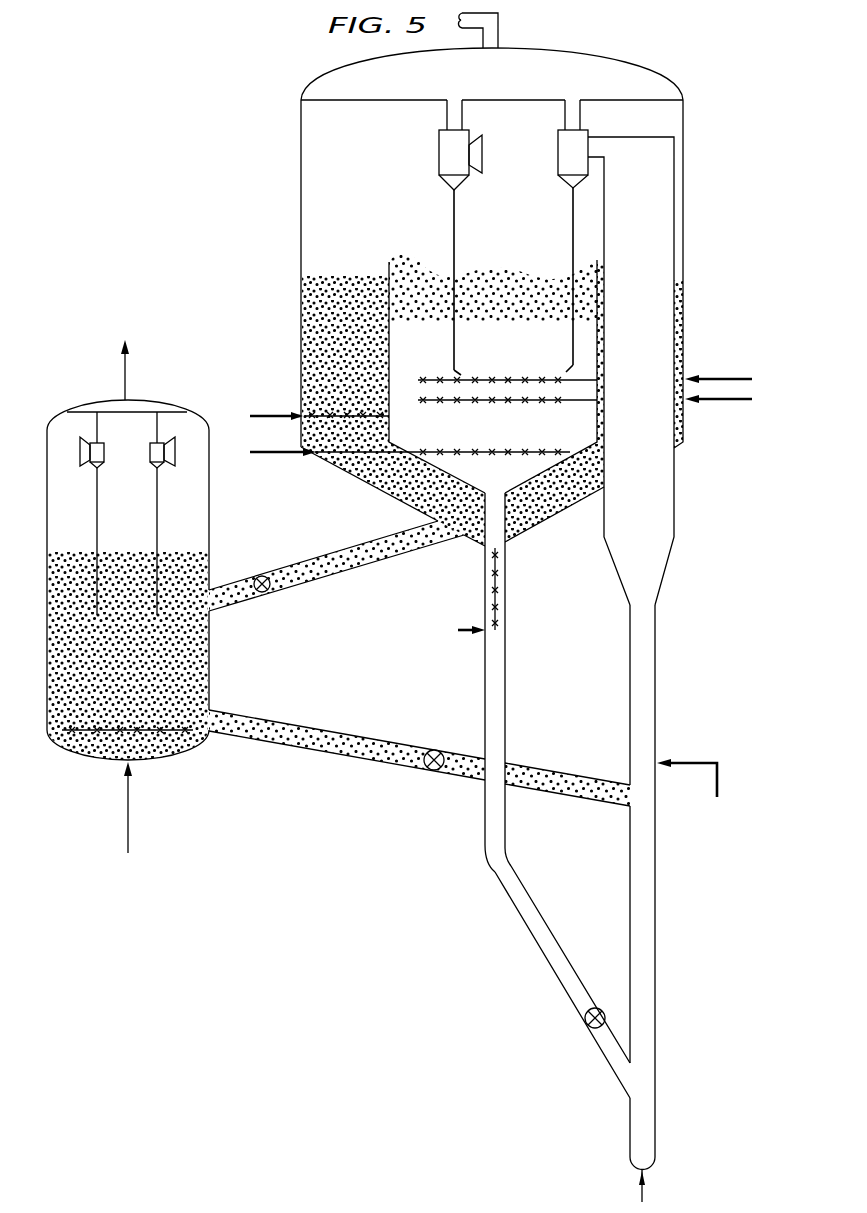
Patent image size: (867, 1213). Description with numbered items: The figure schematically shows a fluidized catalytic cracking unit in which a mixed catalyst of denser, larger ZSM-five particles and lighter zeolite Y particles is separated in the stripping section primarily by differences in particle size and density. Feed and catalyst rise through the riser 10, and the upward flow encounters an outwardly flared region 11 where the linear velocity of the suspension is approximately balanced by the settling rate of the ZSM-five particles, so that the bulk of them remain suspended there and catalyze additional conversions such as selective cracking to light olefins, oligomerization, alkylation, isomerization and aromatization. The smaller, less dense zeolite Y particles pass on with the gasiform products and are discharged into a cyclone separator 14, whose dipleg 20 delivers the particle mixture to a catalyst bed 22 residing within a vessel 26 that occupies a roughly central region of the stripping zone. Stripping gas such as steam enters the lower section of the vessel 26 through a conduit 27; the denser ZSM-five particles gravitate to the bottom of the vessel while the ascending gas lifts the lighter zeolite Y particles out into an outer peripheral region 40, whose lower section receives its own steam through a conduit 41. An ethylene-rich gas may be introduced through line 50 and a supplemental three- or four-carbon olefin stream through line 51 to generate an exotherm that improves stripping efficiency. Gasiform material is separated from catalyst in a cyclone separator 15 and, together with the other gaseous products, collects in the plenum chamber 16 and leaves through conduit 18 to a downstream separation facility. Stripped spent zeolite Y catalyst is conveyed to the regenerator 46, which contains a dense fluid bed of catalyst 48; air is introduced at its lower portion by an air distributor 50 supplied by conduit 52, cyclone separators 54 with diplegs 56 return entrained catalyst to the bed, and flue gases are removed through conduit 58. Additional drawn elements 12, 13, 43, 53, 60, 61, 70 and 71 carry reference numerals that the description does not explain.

The riser 10 is at (657, 893).
The outwardly flared region 11 is at (657, 1040).
The downcomer standpipe 12 is at (676, 488).
The lift gas inlet 13 is at (650, 1192).
The cyclone separator 14 is at (581, 163).
The cyclone separator 15 is at (701, 760).
The plenum chamber 16 is at (500, 86).
The conduit 18 is at (500, 24).
The dipleg 20 is at (573, 218).
The catalyst bed 22 is at (456, 280).
The vessel 26 is at (389, 280).
The conduit 27 is at (273, 461).
The outer peripheral region 40 is at (342, 320).
The conduit 41 is at (273, 410).
The catalyst transfer conduit with valve 43 is at (265, 592).
The regenerator 46 is at (47, 500).
The dense fluid bed of catalyst 48 is at (86, 658).
The air distributor 50 is at (717, 400).
The line 51 is at (718, 379).
The conduit 52 is at (131, 797).
The cyclone separator 53 is at (462, 163).
The cyclone separators 54 is at (457, 203).
The diplegs 56 is at (157, 515).
The conduit 58 is at (128, 375).
The regenerated catalyst conduit 60 is at (335, 733).
The control valve 61 is at (434, 750).
The stripped catalyst conduit 70 is at (506, 602).
The control valve 71 is at (590, 1025).